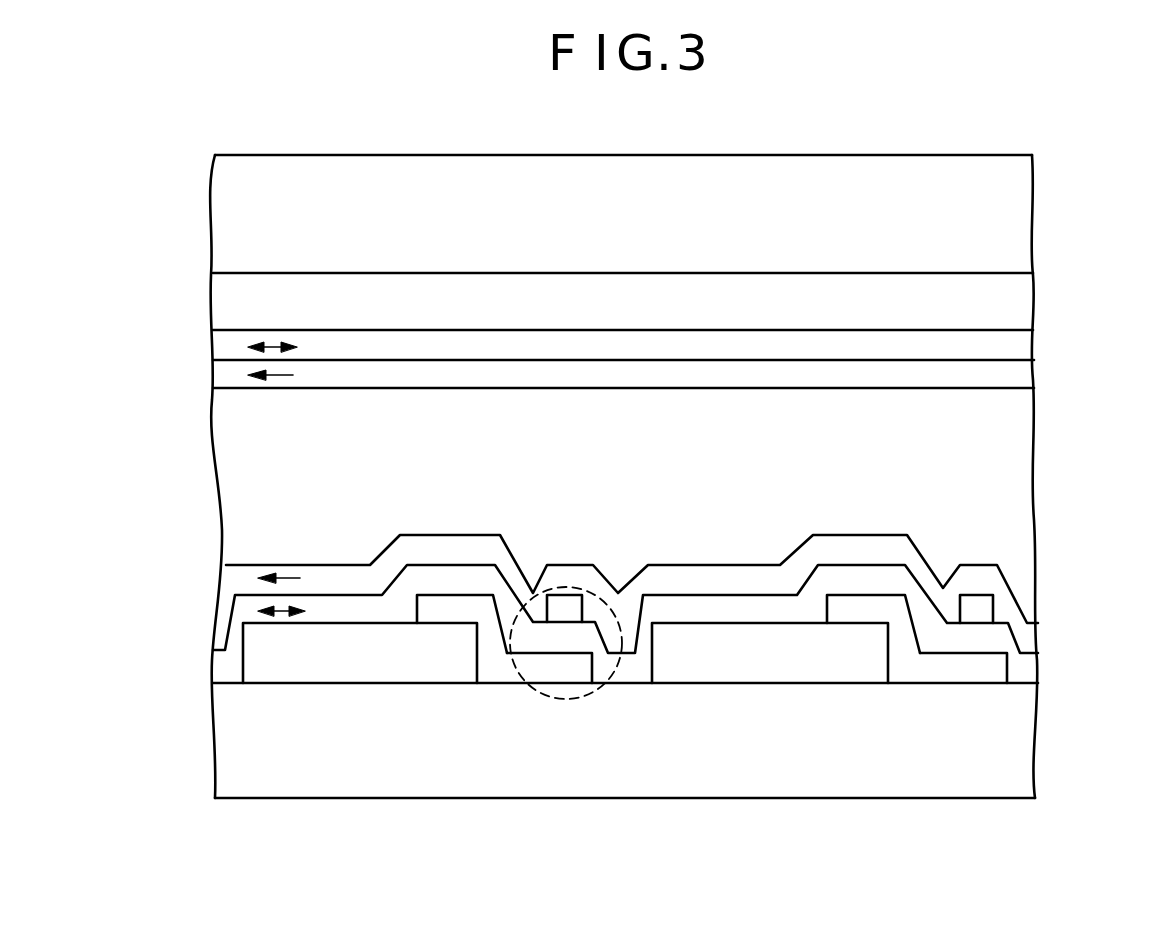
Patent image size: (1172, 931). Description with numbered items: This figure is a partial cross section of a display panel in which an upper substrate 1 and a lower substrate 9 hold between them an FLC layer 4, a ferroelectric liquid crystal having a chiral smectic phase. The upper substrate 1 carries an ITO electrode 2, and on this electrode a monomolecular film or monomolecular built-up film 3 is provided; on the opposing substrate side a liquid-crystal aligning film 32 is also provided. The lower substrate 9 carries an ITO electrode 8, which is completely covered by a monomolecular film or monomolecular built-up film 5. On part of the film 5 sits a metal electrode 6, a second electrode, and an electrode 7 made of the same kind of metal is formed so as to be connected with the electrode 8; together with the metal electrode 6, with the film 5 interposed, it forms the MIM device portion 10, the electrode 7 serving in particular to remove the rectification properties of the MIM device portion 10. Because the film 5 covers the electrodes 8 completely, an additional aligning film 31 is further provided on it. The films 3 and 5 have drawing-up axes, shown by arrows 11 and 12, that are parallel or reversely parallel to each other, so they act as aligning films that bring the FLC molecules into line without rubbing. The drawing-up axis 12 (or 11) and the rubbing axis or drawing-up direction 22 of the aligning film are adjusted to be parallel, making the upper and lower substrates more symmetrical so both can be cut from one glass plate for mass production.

The upper substrate 1 is at (1012, 205).
The ITO electrode 2 is at (1012, 305).
The monomolecular film or monomolecular built-up film 3 is at (1020, 347).
The liquid-crystal aligning film 32 is at (1020, 377).
The FLC layer 4 is at (1015, 438).
The aligning film 31 is at (908, 550).
The monomolecular film or monomolecular built-up film 5 is at (998, 642).
The metal electrode 6 is at (983, 610).
The electrode 7 is at (995, 672).
The ITO electrode 8 is at (275, 662).
The lower substrate 9 is at (947, 783).
The MIM device portion 10 is at (557, 700).
The drawing-up axis 11 is at (275, 345).
The drawing-up axis 12 is at (285, 610).
The rubbing axis or drawing-up direction 22 is at (282, 373).